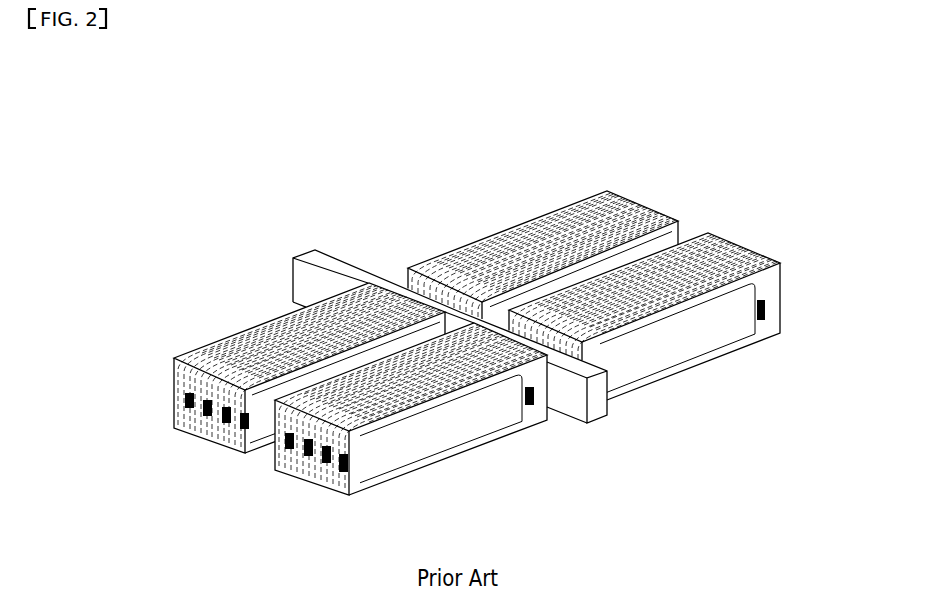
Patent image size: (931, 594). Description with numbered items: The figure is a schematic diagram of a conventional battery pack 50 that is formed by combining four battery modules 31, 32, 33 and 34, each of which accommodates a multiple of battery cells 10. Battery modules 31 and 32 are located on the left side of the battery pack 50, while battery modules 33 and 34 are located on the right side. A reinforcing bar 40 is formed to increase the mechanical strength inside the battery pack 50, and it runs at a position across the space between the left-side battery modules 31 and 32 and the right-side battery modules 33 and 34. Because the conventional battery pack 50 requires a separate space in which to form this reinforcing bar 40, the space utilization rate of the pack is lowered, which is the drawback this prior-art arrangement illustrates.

The battery pack 50 is at (143, 120).
The battery cell 10 is at (447, 437).
The battery module 31 is at (303, 482).
The battery module 32 is at (203, 346).
The battery module 33 is at (781, 292).
The battery module 34 is at (638, 203).
The reinforcing bar 40 is at (607, 407).